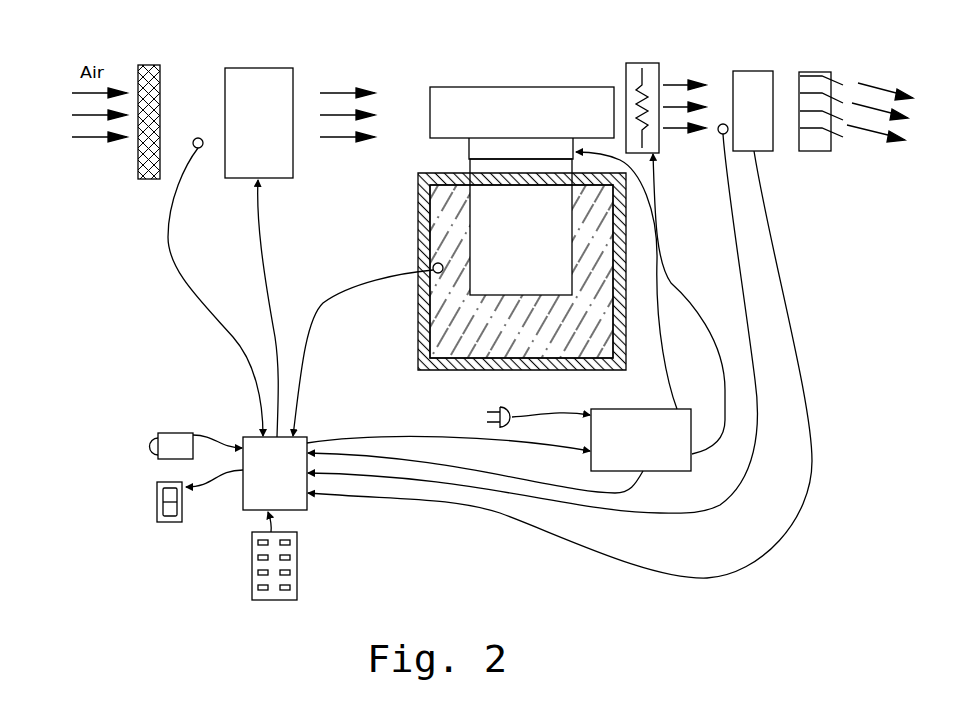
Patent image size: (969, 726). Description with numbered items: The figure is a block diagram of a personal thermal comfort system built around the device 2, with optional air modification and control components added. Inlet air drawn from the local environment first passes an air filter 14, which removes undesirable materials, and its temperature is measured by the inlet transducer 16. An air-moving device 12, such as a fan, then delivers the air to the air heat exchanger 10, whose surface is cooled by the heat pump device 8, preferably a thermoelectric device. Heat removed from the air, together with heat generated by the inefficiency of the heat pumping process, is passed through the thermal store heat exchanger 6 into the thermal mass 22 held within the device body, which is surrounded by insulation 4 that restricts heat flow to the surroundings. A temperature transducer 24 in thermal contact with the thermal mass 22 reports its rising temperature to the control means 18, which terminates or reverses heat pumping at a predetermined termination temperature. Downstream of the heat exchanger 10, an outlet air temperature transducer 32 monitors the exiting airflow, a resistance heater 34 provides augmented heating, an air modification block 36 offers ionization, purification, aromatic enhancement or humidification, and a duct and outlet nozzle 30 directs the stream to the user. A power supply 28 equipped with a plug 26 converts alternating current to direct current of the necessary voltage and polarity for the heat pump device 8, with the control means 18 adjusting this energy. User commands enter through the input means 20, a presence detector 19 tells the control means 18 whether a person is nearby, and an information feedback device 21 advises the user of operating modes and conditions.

The device 2 is at (418, 222).
The insulation 4 is at (418, 240).
The thermal store heat exchanger 6 is at (470, 164).
The heat pump device 8 is at (469, 147).
The air heat exchanger 10 is at (442, 87).
The air-moving device 12 is at (225, 81).
The air filter 14 is at (146, 65).
The inlet temperature transducer 16 is at (197, 138).
The control means 18 is at (244, 437).
The presence detector 19 is at (162, 433).
The input means 20 is at (252, 559).
The information feedback device 21 is at (157, 505).
The thermal mass 22 is at (447, 333).
The temperature transducer 24 is at (436, 273).
The plug 26 is at (512, 407).
The power supply 28 is at (611, 409).
The duct and outlet nozzle 30 is at (817, 72).
The outlet air temperature transducer 32 is at (718, 131).
The resistance heater 34 is at (659, 63).
The air modification block 36 is at (757, 71).